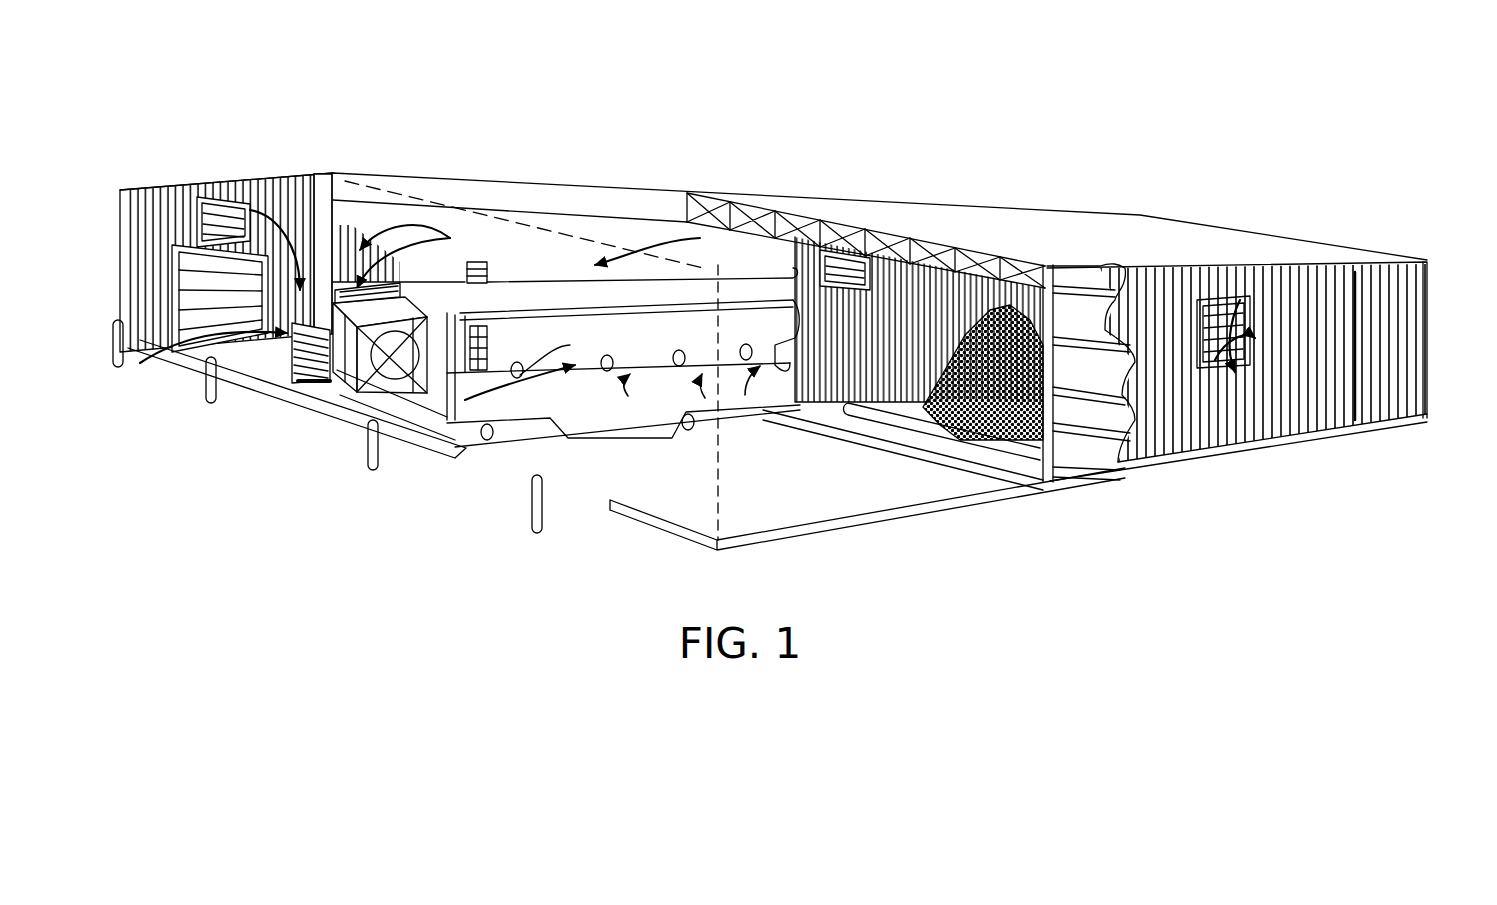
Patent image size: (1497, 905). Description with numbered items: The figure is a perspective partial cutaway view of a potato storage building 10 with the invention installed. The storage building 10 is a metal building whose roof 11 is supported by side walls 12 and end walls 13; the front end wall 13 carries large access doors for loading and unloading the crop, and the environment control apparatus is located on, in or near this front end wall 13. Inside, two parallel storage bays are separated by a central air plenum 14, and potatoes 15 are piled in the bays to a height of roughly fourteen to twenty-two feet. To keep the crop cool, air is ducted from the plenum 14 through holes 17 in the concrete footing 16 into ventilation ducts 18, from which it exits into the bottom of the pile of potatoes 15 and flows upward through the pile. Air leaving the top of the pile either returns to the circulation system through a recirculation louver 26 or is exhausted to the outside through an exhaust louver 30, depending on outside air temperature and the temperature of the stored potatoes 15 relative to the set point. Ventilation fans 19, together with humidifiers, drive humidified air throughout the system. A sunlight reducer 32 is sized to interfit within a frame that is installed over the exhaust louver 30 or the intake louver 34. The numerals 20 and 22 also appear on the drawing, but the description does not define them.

The potato storage building 10 is at (695, 145).
The roof 11 is at (1236, 247).
The side walls 12 is at (1425, 318).
The end walls 13 is at (250, 210).
The central air plenum 14 is at (548, 232).
The potatoes 15 is at (1003, 433).
The concrete footing 16 is at (738, 413).
The holes 17 is at (520, 348).
The ventilation ducts 18 is at (947, 430).
The ventilation fans 19 is at (363, 387).
The door 20 is at (197, 358).
The air duct 22 is at (624, 298).
The recirculation louver 26 is at (825, 258).
The exhaust louver 30 is at (253, 203).
The sunlight reducer 32 is at (345, 385).
The intake louver 34 is at (307, 380).